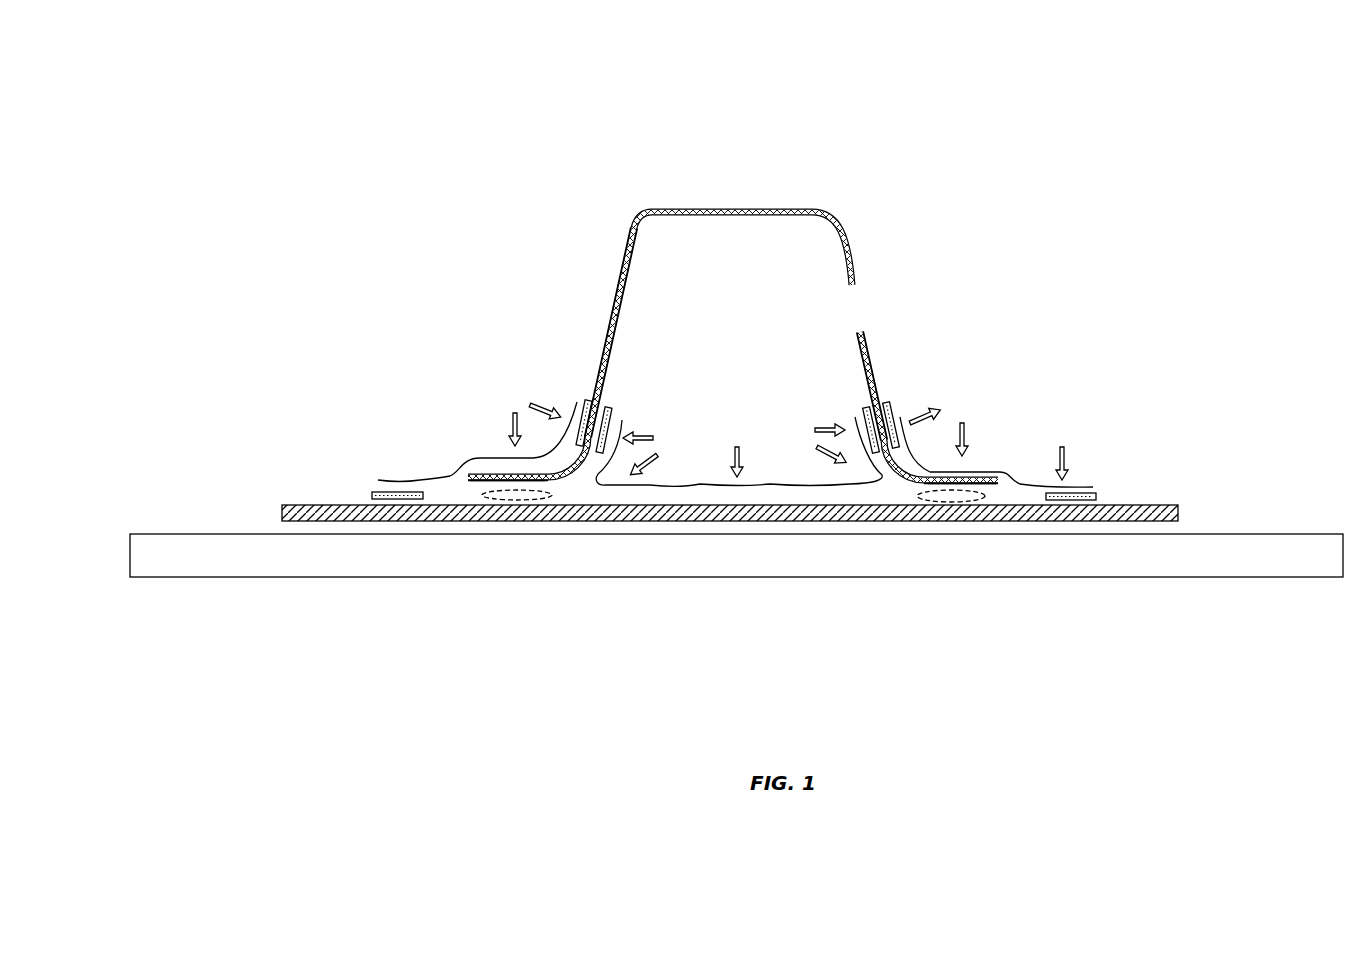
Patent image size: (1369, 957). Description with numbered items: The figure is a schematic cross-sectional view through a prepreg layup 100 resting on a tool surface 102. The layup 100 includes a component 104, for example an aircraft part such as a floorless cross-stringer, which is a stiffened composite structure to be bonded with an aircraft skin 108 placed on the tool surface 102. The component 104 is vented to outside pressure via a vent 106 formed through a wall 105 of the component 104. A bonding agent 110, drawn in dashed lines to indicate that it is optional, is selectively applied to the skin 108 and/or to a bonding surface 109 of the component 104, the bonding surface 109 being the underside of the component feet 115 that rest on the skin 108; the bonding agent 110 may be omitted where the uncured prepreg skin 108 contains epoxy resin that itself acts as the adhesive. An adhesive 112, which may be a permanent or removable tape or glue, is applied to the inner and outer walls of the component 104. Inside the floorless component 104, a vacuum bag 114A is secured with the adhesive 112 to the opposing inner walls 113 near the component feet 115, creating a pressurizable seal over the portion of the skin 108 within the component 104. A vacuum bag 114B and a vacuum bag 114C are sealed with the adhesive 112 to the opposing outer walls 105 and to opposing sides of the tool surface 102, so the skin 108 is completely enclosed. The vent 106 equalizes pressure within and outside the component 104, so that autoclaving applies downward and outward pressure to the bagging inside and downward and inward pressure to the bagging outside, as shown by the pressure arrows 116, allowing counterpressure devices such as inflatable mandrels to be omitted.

The prepreg layup 100 is at (416, 116).
The tool surface 102 is at (1283, 578).
The component 104 is at (833, 217).
The wall 105 is at (612, 340).
The vent 106 is at (864, 304).
The aircraft skin 108 is at (1145, 507).
The bonding surface 109 is at (547, 478).
The bonding agent 110 is at (525, 498).
The adhesive 112 is at (586, 402).
The inner walls 113 is at (614, 362).
The vacuum bag 114A is at (683, 483).
The vacuum bag 114B is at (1027, 485).
The vacuum bag 114C is at (447, 473).
The component feet 115 is at (508, 470).
The pressure arrows 116 is at (738, 442).